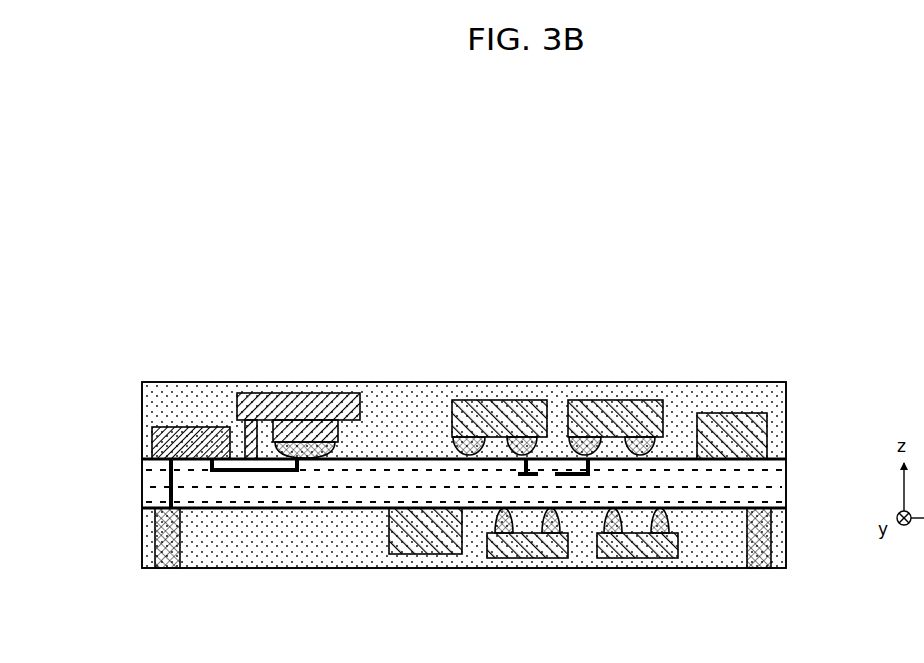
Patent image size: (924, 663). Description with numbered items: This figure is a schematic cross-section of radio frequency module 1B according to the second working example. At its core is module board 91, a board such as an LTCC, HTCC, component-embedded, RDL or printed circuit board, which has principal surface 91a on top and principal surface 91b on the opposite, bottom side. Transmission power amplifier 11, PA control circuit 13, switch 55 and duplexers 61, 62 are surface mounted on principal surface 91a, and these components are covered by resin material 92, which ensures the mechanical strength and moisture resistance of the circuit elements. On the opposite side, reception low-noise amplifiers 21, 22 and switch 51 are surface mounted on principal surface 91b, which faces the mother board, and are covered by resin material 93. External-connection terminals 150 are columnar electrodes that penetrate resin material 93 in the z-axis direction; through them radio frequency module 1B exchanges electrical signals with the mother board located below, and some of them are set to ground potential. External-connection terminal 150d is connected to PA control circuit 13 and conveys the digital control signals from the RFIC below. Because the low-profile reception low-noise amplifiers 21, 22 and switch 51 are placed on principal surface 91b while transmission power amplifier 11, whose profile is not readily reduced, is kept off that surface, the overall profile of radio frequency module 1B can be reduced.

The radio frequency module 1B is at (850, 362).
The transmission power amplifier 11 is at (300, 393).
The PA control circuit 13 is at (180, 427).
The reception low-noise amplifier 21 is at (541, 546).
The reception low-noise amplifier 22 is at (652, 546).
The switch 51 is at (428, 543).
The switch 55 is at (742, 413).
The duplexer 61 is at (503, 400).
The duplexer 62 is at (632, 400).
The module board 91 is at (777, 484).
The principal surface 91a is at (775, 454).
The principal surface 91b is at (786, 522).
The resin material 92 is at (778, 403).
The resin material 93 is at (783, 547).
The external-connection terminal 150 is at (757, 569).
The external-connection terminal 150d is at (166, 569).